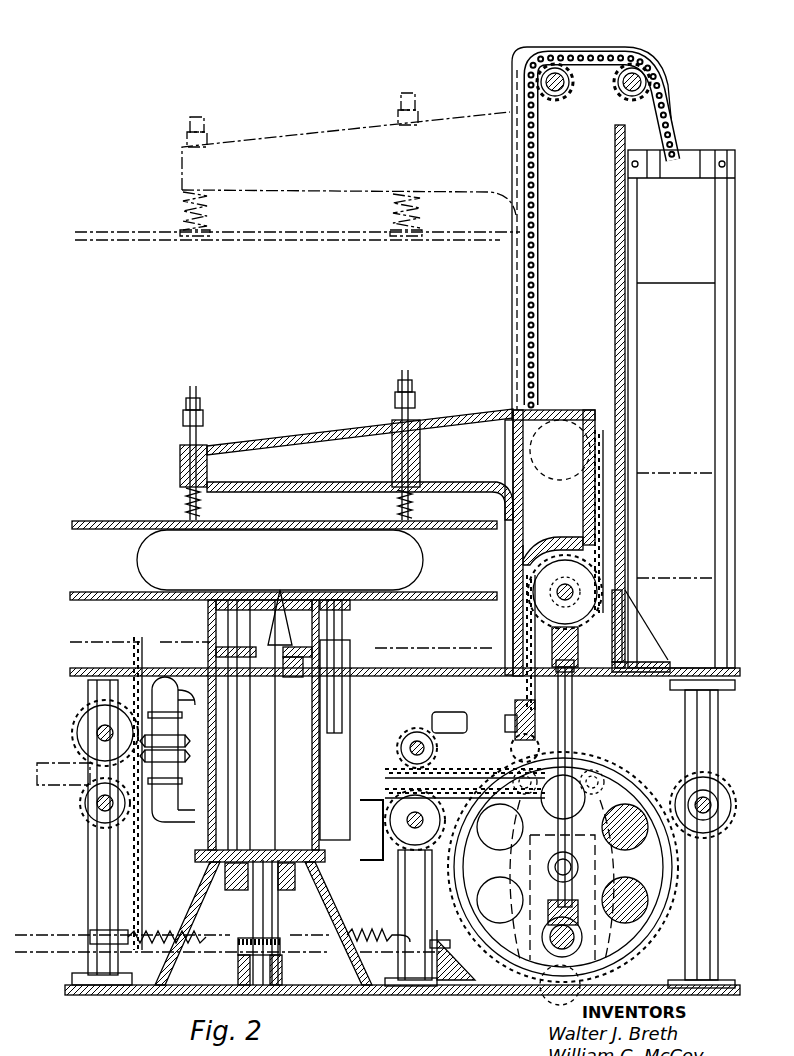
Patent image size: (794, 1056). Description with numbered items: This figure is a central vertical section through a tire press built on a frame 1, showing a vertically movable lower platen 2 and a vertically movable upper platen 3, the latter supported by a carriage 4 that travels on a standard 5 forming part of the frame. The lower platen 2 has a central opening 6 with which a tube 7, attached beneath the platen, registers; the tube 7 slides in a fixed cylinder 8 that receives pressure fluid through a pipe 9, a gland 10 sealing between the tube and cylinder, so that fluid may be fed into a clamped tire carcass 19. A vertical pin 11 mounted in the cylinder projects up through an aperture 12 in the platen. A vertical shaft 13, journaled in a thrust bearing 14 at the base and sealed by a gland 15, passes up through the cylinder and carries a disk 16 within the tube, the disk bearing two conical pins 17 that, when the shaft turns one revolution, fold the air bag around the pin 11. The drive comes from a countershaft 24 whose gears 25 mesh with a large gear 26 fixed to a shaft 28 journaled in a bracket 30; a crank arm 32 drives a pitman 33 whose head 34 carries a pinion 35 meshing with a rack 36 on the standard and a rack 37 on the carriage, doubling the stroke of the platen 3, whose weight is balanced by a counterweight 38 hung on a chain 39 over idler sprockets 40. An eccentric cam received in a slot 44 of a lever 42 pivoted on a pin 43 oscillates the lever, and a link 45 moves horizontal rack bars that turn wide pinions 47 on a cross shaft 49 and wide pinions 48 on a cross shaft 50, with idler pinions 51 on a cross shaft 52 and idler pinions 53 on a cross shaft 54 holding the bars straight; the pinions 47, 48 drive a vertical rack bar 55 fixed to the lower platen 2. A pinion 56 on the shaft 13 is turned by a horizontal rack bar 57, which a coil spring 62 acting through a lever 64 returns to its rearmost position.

The frame 1 is at (88, 860).
The lower platen 2 is at (84, 592).
The upper platen 3 is at (88, 529).
The carriage 4 is at (330, 432).
The standard 5 is at (508, 320).
The central opening 6 is at (298, 600).
The tube 7 is at (308, 718).
The fixed cylinder 8 is at (312, 776).
The pipe 9 is at (160, 818).
The gland 10 is at (299, 725).
The vertical pin 11 is at (349, 666).
The aperture 12 is at (348, 600).
The vertical shaft 13 is at (253, 902).
The thrust bearing 14 is at (316, 996).
The gland 15 is at (312, 800).
The disk 16 is at (300, 660).
The conical pins 17 is at (258, 644).
The tire carcass 19 is at (140, 565).
The countershaft 24 is at (716, 810).
The gears 25 is at (728, 788).
The large gear 26 is at (632, 772).
The shaft 28 is at (548, 866).
The bracket 30 is at (612, 976).
The crank arm 32 is at (500, 900).
The pitman 33 is at (574, 714).
The head 34 is at (595, 672).
The pinion 35 is at (542, 470).
The rack 36 is at (606, 528).
The rack 37 is at (515, 692).
The counterweight 38 is at (680, 286).
The chain 39 is at (540, 190).
The idler sprockets 40 is at (608, 80).
The lever 42 is at (652, 836).
The pin 43 is at (552, 1000).
The slot 44 is at (622, 812).
The link 45 is at (530, 755).
The wide pinions 47 is at (54, 730).
The wide pinions 48 is at (400, 846).
The cross shaft 49 is at (100, 730).
The cross shaft 50 is at (415, 888).
The idler pinions 51 is at (80, 802).
The cross shaft 52 is at (98, 810).
The idler pinions 53 is at (508, 726).
The cross shaft 54 is at (426, 752).
The vertical rack bar 55 is at (135, 648).
The pinion 56 is at (282, 946).
The horizontal rack bar 57 is at (34, 935).
The coil spring 62 is at (198, 948).
The lever 64 is at (128, 930).